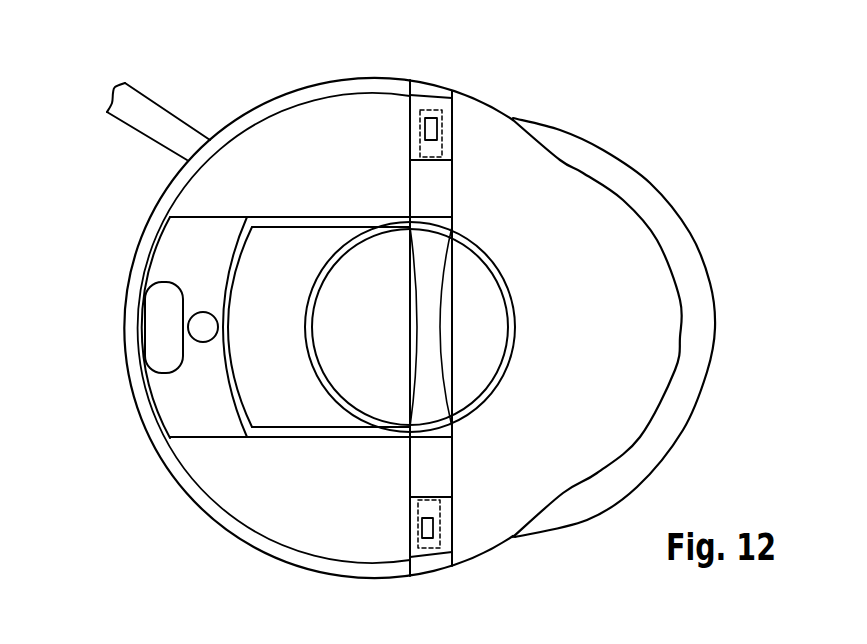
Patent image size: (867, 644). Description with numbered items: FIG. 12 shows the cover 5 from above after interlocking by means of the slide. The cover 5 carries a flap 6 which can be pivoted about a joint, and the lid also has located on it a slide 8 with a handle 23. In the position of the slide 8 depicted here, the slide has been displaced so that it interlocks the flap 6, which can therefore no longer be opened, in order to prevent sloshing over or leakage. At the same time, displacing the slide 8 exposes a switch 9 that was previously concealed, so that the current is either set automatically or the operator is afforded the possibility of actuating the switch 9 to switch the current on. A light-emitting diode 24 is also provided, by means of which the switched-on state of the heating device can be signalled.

The cover 5 is at (210, 197).
The flap 6 is at (577, 177).
The slide 8 is at (293, 418).
The switch 9 is at (157, 345).
The handle 23 is at (430, 263).
The light-emitting diode 24 is at (193, 320).